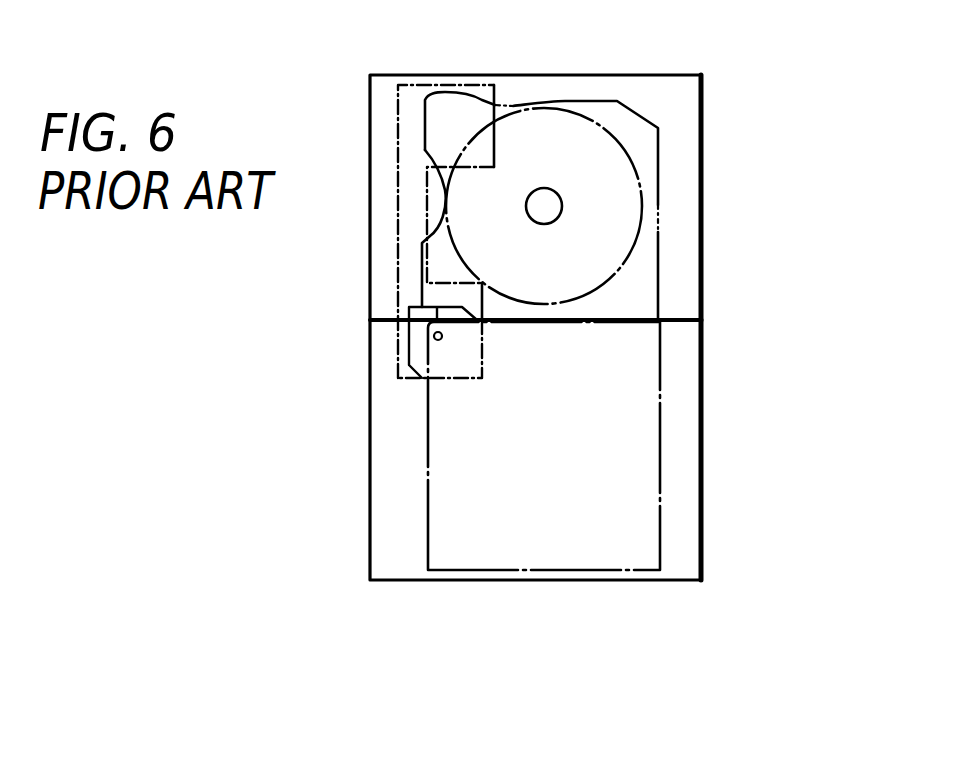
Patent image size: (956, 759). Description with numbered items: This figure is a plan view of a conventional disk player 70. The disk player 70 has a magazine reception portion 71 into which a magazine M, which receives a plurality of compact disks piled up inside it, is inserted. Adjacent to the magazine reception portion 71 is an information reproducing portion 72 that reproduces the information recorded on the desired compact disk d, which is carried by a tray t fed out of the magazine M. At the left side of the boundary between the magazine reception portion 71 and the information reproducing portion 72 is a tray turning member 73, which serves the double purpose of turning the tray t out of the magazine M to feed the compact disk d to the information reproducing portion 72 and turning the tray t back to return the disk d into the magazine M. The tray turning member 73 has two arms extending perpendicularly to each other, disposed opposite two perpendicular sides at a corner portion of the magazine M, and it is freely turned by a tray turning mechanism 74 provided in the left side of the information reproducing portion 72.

The disk player 70 is at (603, 327).
The magazine reception portion 71 is at (684, 520).
The information reproducing portion 72 is at (684, 214).
The tray turning member 73 is at (417, 347).
The tray turning mechanism 74 is at (408, 182).
The tray t is at (658, 163).
The compact disk d is at (582, 135).
The magazine M is at (480, 552).